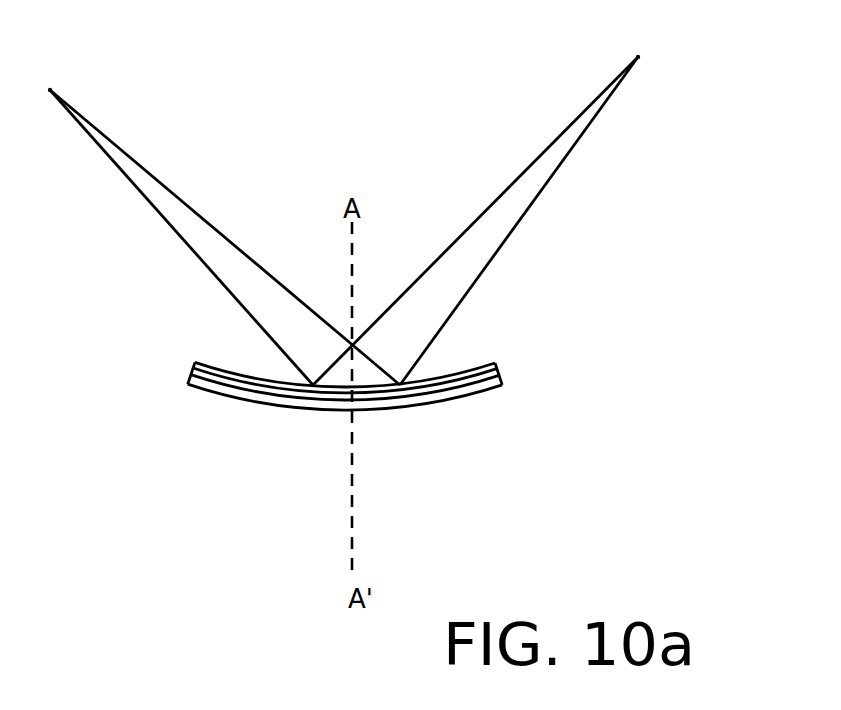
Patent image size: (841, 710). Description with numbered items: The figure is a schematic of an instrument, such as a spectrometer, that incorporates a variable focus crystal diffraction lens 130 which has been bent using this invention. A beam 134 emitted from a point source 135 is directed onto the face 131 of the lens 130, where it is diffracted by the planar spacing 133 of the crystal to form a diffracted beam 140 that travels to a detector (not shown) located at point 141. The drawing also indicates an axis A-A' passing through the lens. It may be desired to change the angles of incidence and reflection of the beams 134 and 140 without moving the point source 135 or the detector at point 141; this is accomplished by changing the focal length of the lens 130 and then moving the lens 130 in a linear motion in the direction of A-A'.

The variable focus crystal diffraction lens 130 is at (191, 380).
The face 131 is at (237, 382).
The planar spacing 133 is at (470, 383).
The beam 134 is at (213, 252).
The point source 135 is at (51, 90).
The diffracted beam 140 is at (525, 210).
The point 141 is at (639, 57).